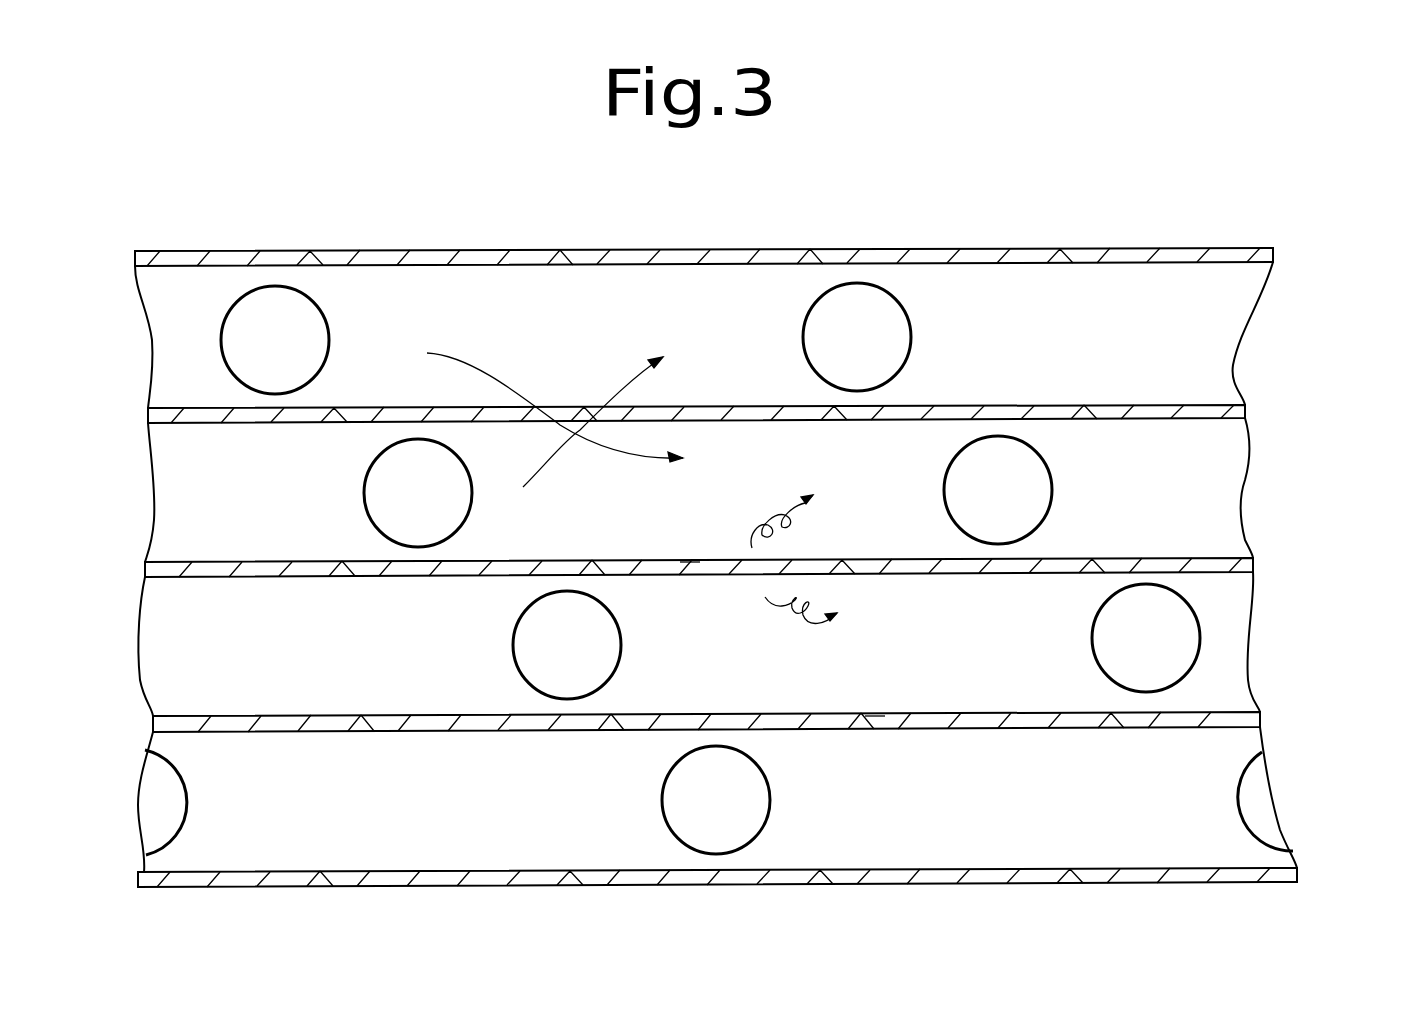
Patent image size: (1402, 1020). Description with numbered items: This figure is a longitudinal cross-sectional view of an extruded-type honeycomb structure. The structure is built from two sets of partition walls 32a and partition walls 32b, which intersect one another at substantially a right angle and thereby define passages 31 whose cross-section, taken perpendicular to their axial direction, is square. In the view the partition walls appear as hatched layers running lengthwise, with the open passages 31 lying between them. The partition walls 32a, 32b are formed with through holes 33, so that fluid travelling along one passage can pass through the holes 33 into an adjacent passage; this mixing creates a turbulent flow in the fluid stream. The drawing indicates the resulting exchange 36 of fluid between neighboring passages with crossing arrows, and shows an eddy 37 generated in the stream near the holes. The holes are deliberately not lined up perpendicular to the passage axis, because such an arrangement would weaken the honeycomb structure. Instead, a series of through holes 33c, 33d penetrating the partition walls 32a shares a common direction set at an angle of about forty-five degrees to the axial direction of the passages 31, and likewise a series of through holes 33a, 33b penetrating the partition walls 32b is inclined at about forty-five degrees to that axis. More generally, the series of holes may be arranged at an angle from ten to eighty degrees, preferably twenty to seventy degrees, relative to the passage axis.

The passages 31 is at (178, 388).
The partition walls 32a is at (1210, 563).
The partition walls 32b is at (1185, 813).
The through holes 33 is at (885, 330).
The through hole 33a is at (607, 652).
The through hole 33b is at (743, 803).
The through hole 33c is at (692, 570).
The through hole 33d is at (875, 720).
The exchange 36 is at (610, 378).
The eddy 37 is at (816, 554).